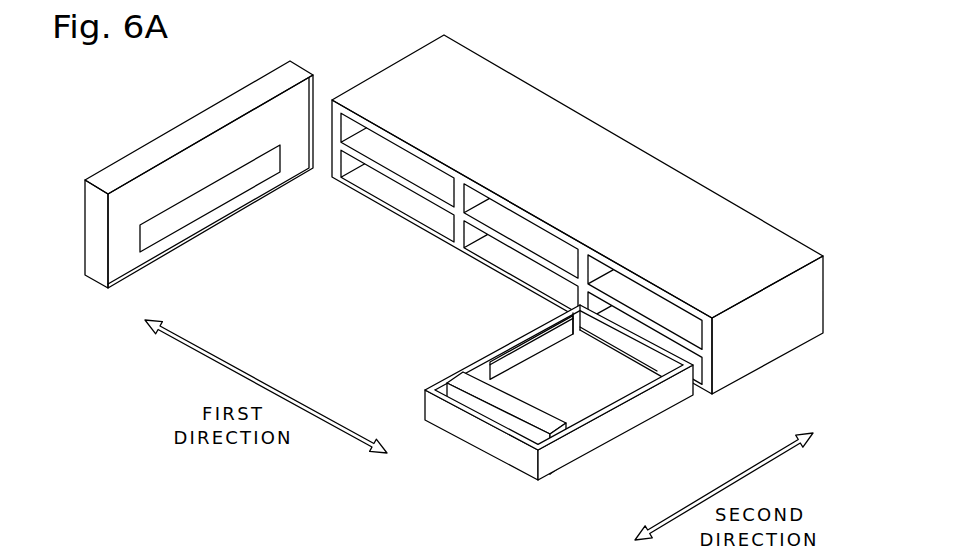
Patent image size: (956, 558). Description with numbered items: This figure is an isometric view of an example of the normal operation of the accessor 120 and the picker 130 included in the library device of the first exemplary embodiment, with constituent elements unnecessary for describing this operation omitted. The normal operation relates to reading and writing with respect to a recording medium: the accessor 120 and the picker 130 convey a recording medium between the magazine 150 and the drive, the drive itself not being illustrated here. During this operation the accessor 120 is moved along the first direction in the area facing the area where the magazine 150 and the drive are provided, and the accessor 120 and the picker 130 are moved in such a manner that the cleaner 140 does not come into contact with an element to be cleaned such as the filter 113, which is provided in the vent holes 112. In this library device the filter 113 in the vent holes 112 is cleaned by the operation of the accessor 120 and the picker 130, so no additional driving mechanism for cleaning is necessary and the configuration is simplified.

The vent holes 112 is at (199, 174).
The filter 113 is at (258, 157).
The accessor 120 is at (585, 420).
The picker 130 is at (559, 420).
The cleaner 140 is at (447, 403).
The magazine 150 is at (622, 162).